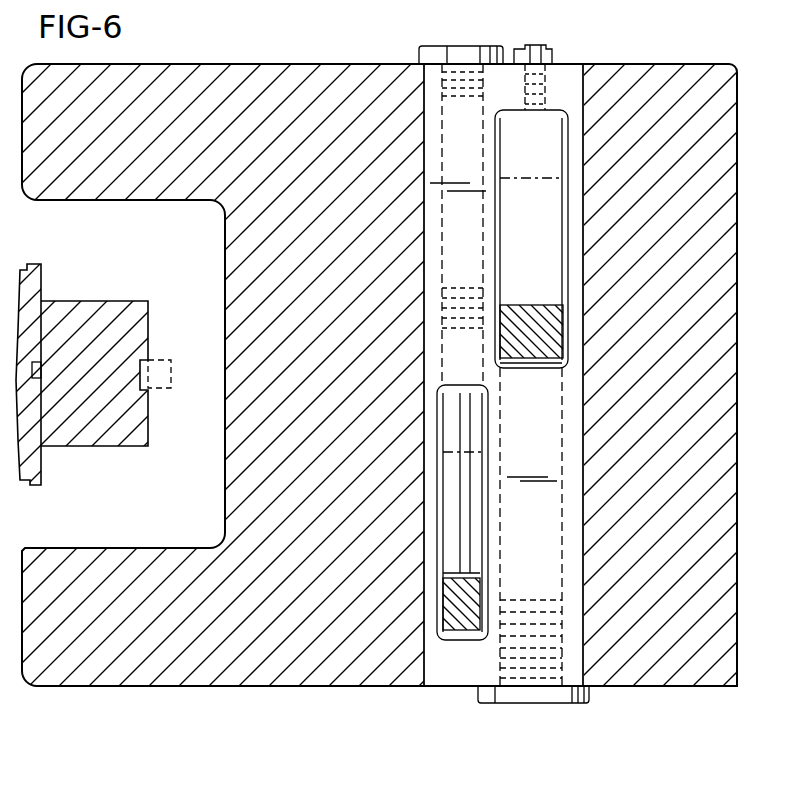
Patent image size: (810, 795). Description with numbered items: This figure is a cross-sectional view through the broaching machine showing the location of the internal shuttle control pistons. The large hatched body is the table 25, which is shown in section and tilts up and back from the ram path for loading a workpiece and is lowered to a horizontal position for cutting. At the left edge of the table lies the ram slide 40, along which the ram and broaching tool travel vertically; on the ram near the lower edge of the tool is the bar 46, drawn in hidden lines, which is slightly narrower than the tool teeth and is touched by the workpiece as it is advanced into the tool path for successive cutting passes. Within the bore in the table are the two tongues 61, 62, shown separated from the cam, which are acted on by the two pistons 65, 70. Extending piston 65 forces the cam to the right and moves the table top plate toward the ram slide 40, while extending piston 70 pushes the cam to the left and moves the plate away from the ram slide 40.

The table 25 is at (337, 672).
The ram slide 40 is at (50, 286).
The bar 46 is at (162, 360).
The tongue 61 is at (483, 458).
The tongue 62 is at (551, 130).
The piston 65 is at (470, 512).
The piston 70 is at (500, 392).